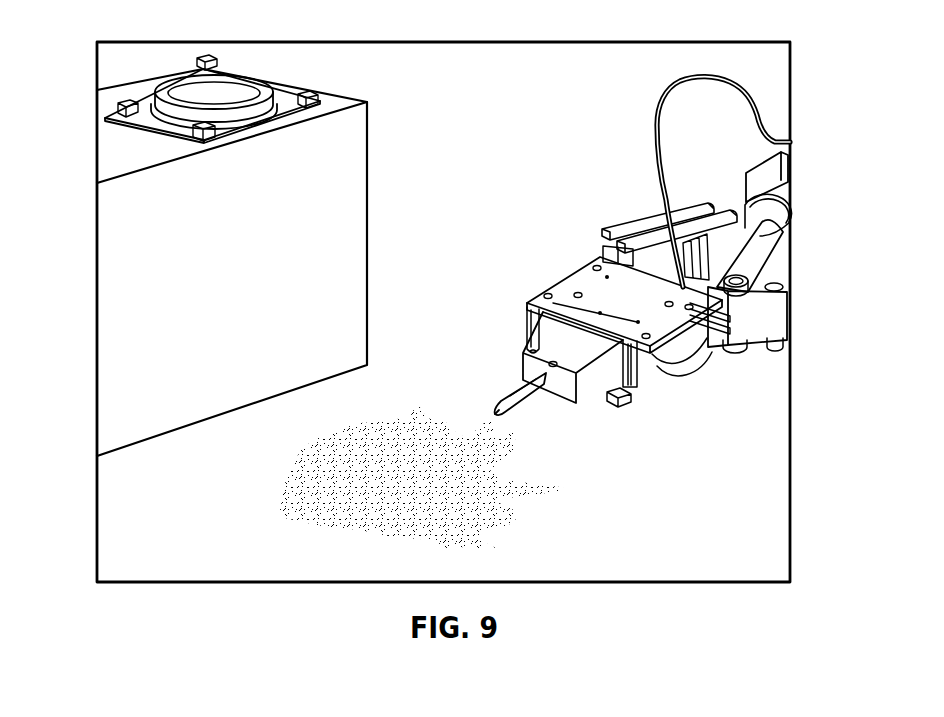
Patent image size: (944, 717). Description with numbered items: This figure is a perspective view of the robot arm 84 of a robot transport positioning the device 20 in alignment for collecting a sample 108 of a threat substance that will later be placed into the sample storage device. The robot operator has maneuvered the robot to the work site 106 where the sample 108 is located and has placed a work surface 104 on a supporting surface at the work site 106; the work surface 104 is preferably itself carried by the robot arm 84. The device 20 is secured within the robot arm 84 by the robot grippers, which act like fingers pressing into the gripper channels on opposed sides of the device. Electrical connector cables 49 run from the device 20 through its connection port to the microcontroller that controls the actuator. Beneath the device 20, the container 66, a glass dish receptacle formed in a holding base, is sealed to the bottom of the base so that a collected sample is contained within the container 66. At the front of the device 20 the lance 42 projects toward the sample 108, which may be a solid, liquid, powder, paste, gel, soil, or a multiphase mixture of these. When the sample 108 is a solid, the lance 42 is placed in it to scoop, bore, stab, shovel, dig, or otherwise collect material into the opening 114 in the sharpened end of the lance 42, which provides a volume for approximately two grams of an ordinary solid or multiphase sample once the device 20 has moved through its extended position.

The work surface 104 is at (173, 293).
The container 66 is at (145, 127).
The work site 106 is at (221, 451).
The sample 108 is at (348, 505).
The device 20 is at (587, 388).
The lance 42 is at (520, 385).
The opening 114 is at (516, 407).
The robot arm 84 is at (760, 253).
The electrical connector cables 49 is at (754, 101).